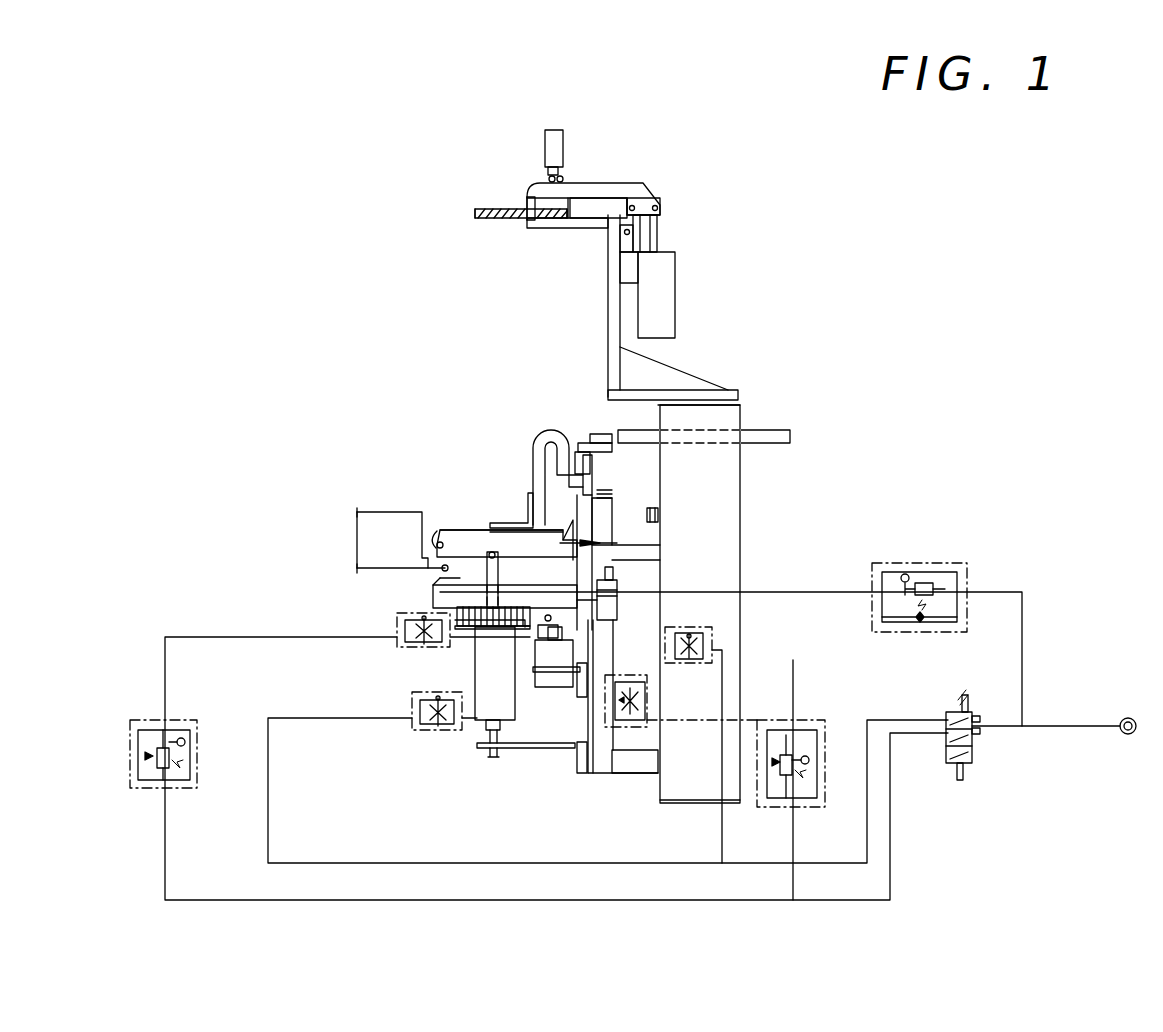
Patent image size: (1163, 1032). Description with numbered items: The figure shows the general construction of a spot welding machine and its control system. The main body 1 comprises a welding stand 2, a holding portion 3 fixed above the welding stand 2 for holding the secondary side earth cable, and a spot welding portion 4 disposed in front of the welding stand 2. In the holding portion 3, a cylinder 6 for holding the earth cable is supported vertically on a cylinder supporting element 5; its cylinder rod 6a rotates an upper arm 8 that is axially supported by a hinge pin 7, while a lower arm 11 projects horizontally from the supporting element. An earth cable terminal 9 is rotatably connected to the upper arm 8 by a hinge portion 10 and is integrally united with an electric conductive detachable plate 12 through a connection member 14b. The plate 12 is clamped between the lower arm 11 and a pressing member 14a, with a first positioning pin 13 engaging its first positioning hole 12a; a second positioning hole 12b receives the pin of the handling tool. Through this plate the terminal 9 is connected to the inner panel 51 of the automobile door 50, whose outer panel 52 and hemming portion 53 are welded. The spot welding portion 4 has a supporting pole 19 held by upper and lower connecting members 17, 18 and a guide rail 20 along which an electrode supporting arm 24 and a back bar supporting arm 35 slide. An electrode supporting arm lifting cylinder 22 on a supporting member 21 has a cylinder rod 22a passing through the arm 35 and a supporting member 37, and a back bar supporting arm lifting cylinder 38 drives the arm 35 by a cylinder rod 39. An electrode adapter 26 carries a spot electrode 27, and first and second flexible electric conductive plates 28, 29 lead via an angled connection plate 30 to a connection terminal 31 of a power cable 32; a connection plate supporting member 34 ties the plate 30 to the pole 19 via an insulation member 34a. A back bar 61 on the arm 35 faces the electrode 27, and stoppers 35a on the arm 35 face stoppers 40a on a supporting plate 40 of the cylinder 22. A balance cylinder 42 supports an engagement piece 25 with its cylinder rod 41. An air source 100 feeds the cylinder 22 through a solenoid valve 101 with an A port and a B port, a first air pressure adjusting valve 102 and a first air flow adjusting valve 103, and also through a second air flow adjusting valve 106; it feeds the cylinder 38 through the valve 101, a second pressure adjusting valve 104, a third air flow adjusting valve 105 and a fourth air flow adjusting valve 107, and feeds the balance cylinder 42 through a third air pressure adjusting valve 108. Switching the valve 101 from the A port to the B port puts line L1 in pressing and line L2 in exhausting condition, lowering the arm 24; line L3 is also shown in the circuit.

The main body 1 is at (752, 421).
The welding stand 2 is at (735, 618).
The holding portion 3 is at (596, 175).
The spot welding portion 4 is at (426, 420).
The cylinder supporting element 5 is at (612, 298).
The cylinder for holding earth cable 6 is at (664, 294).
The cylinder rod 6a is at (656, 240).
The hinge pin 7 is at (636, 208).
The upper arm 8 is at (643, 195).
The earth cable terminal 9 is at (580, 196).
The hinge portion 10 is at (566, 183).
The lower arm 11 is at (580, 229).
The electric conductive detachable plate 12 is at (503, 220).
The first positioning hole 12a is at (528, 192).
The second positioning hole 12b is at (475, 211).
The first positioning pin 13 is at (530, 221).
The pressing member 14a is at (524, 200).
The connection member 14b is at (572, 200).
The upper connecting member 17 is at (660, 517).
The lower connecting member 18 is at (620, 765).
The supporting pole 19 is at (614, 510).
The guide rail 20 is at (534, 452).
The supporting member 21 is at (493, 749).
The electrode supporting arm lifting cylinder 22 is at (477, 718).
The cylinder rod 22a is at (462, 540).
The electrode supporting arm 24 is at (520, 548).
The engagement piece 25 is at (700, 552).
The electrode adapter 26 is at (485, 532).
The spot electrode 27 is at (438, 542).
The first flexible electric conductive plate 28 is at (530, 500).
The second flexible electric conductive plate 29 is at (548, 432).
The electric conductive connection plate 30 is at (580, 444).
The connection terminal 31 is at (600, 434).
The power cable 32 is at (770, 432).
The connection plate supporting member 34 is at (592, 476).
The insulation member 34a is at (605, 500).
The back bar supporting arm 35 is at (437, 596).
The stopper 35a is at (457, 616).
The supporting member 37 is at (580, 748).
The back bar supporting arm lifting cylinder 38 is at (563, 682).
The cylinder rod 39 is at (508, 753).
The supporting plate 40 is at (600, 626).
The stopper 40a is at (520, 612).
The cylinder rod 41 is at (614, 584).
The balance cylinder 42 is at (620, 606).
The automobile door 50 is at (366, 508).
The inner panel 51 is at (368, 517).
The outer panel 52 is at (433, 587).
The hemming portion 53 is at (440, 578).
The back bar 61 is at (448, 574).
The air source 100 is at (1130, 718).
The solenoid valve 101 is at (975, 752).
The first air pressure adjusting valve 102 is at (196, 720).
The first air flow adjusting valve 103 is at (400, 640).
The second pressure adjusting valve 104 is at (826, 733).
The third air flow adjusting valve 105 is at (636, 730).
The second air flow adjusting valve 106 is at (432, 735).
The fourth air flow adjusting valve 107 is at (714, 645).
The third air pressure adjusting valve 108 is at (968, 563).
The A port A is at (946, 717).
The B port B is at (946, 752).
The line L1 is at (218, 900).
The line L2 is at (843, 863).
The air line L3 is at (853, 592).